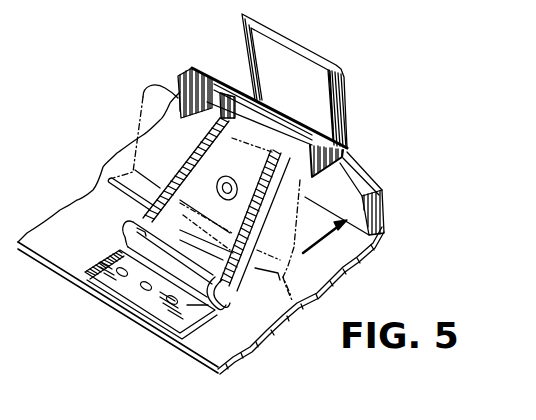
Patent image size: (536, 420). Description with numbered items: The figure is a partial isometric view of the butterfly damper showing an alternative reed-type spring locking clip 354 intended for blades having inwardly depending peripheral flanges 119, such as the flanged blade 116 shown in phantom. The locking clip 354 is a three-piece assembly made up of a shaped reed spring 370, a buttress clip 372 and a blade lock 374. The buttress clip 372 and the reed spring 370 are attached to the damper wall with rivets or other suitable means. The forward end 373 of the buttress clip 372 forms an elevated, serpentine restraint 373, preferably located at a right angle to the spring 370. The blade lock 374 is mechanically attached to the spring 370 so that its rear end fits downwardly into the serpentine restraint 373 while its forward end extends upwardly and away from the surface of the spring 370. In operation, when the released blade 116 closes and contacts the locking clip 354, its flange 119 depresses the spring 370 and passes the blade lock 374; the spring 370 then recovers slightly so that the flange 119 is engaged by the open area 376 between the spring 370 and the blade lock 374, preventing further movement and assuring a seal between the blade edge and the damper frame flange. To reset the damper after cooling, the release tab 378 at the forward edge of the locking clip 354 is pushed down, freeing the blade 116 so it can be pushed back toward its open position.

The blade 116 is at (157, 137).
The peripheral flange 119 is at (290, 300).
The spring locking clip 354 is at (350, 138).
The reed spring 370 is at (347, 151).
The buttress clip 372 is at (215, 310).
The serpentine restraint 373 is at (128, 242).
The blade lock 374 is at (217, 107).
The open area 376 is at (254, 82).
The release tab 378 is at (306, 50).